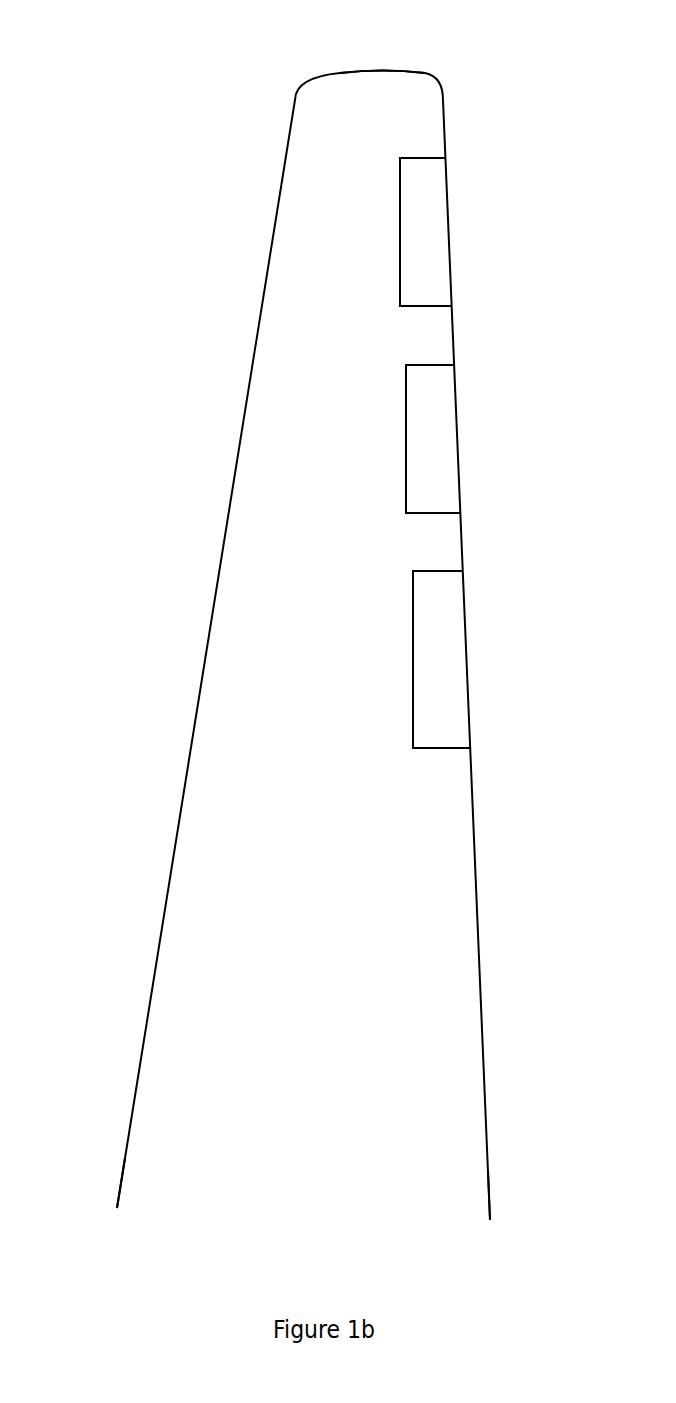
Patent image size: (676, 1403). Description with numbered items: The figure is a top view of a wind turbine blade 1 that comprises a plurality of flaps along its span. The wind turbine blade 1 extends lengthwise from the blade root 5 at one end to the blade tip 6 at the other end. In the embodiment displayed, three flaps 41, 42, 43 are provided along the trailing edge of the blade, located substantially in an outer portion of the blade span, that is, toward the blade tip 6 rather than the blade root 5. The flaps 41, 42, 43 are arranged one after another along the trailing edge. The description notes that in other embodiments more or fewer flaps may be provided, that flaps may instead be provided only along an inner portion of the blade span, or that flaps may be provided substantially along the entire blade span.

The wind turbine blade 1 is at (313, 265).
The blade root 5 is at (201, 1256).
The blade tip 6 is at (398, 56).
The flap 41 is at (442, 688).
The flap 42 is at (428, 443).
The flap 43 is at (422, 229).